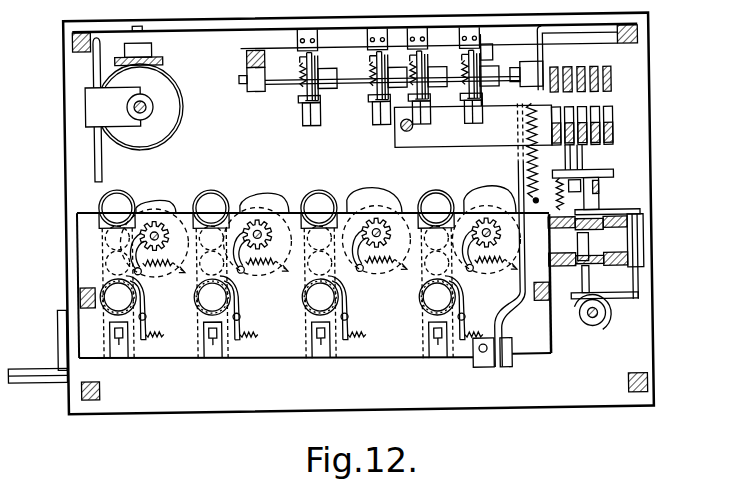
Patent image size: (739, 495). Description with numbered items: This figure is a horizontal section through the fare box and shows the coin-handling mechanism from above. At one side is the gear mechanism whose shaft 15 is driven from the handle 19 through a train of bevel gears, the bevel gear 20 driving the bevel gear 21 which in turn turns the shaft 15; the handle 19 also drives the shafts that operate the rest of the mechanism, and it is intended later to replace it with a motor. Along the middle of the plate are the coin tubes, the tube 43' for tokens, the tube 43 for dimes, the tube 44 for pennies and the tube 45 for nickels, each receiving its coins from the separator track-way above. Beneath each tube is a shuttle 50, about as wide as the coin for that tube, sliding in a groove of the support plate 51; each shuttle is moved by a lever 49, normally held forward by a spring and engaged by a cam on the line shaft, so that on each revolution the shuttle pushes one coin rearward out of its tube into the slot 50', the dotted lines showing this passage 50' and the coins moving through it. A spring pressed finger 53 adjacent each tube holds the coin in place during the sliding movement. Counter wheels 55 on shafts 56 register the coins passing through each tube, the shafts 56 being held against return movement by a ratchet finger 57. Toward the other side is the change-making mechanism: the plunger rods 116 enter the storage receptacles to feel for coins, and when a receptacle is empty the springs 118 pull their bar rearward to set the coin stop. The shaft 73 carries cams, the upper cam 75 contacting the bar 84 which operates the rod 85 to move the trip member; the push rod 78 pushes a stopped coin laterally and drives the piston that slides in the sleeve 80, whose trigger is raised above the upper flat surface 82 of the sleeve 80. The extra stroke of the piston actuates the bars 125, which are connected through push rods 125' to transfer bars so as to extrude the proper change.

The shaft 15 is at (155, 103).
The bevel gear 20 is at (165, 59).
The bevel gear 21 is at (174, 134).
The plunger rod 116 is at (306, 126).
The spring 118 is at (376, 93).
The bar 125 is at (523, 138).
The push rod 125' is at (604, 78).
The sleeve 80 is at (605, 184).
The upper flat surface 82 is at (604, 199).
The handle 19 is at (581, 247).
The push rod 78 is at (586, 297).
The rod 85 is at (638, 283).
The bar 84 is at (616, 299).
The shaft 73 is at (584, 323).
The upper cam 75 is at (602, 346).
The slot 50' is at (85, 292).
The tube 43 is at (149, 296).
The tube 43' is at (154, 307).
The spring pressed finger 53 is at (236, 309).
The ratchet finger 57 is at (252, 270).
The shaft 56 is at (258, 230).
The counter wheel 55 is at (277, 212).
The tube 44 is at (307, 301).
The tube 45 is at (426, 298).
The shuttle 50 is at (124, 354).
The support plate 51 is at (183, 350).
The lever 49 is at (213, 337).